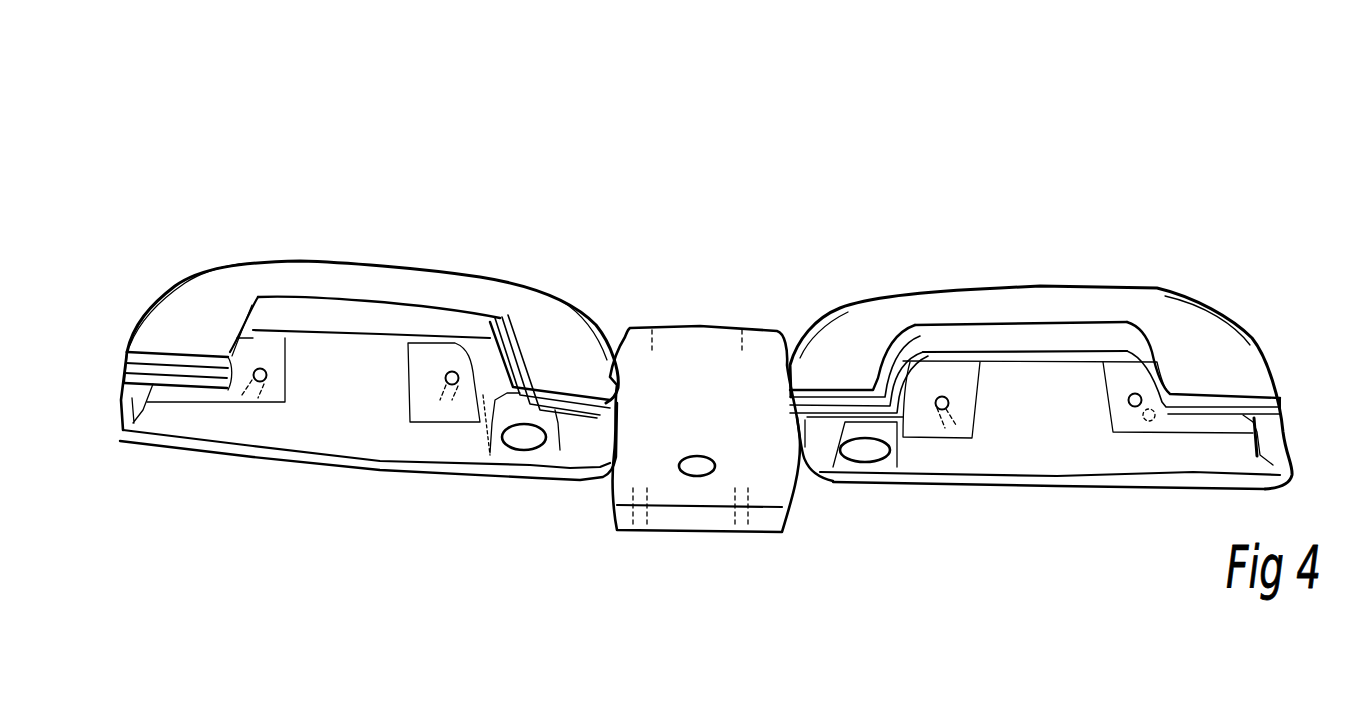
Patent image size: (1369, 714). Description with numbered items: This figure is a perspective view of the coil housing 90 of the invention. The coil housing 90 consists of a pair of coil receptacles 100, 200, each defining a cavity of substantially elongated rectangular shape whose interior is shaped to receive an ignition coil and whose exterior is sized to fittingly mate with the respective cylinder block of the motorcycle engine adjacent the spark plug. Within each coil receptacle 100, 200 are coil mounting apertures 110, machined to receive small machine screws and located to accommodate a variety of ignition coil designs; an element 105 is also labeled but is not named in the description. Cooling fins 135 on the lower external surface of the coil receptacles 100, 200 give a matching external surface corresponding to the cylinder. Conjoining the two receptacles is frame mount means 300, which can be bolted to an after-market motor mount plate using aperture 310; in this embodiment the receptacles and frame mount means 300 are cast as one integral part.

The coil housing 90 is at (514, 274).
The coil receptacle 100 is at (362, 283).
The coil receptacle 200 is at (1022, 310).
The frame mount means 300 is at (687, 387).
The aperture 310 is at (700, 458).
The mounting boss opening 105 is at (528, 440).
The coil mounting apertures 110 is at (263, 381).
The cooling fins 135 is at (127, 362).